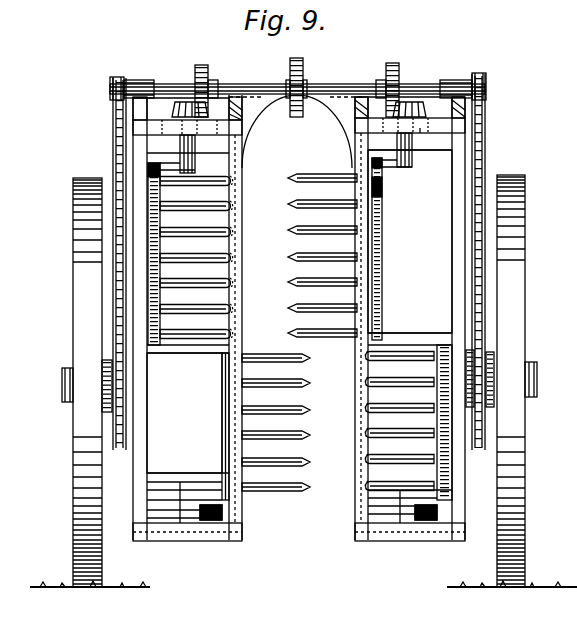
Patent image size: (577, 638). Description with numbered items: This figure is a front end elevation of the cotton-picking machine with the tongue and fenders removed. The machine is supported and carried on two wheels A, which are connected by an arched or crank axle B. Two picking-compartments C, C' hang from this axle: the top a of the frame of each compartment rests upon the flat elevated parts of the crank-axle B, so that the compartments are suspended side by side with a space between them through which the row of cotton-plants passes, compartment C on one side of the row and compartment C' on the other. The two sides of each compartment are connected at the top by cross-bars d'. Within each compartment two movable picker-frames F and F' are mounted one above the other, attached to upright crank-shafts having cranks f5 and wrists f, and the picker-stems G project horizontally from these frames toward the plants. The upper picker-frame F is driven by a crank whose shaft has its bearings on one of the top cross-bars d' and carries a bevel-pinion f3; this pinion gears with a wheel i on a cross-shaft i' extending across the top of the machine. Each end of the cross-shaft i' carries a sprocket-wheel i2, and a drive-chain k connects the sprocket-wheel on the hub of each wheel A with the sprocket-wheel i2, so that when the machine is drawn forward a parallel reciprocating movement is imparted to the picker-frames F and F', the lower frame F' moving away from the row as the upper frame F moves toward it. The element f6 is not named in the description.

The supporting wheels A is at (80, 287).
The drive-chain k is at (112, 133).
The sprocket-wheel i2 is at (111, 80).
The wheel i is at (300, 79).
The cross-shaft i' is at (319, 87).
The bevel-pinion f3 is at (176, 108).
The arched crank-axle B is at (255, 122).
The top of compartment frame a is at (432, 122).
The crank f5 is at (178, 162).
The wrist f is at (155, 268).
The upper picker-frame F is at (280, 257).
The lower picker-frame F' is at (313, 421).
The picker-stems G is at (295, 281).
The picking-compartment C is at (188, 426).
The picking-compartment C' is at (410, 230).
The cross-bar d' is at (432, 151).
The lower actuating mechanism f6 is at (215, 522).